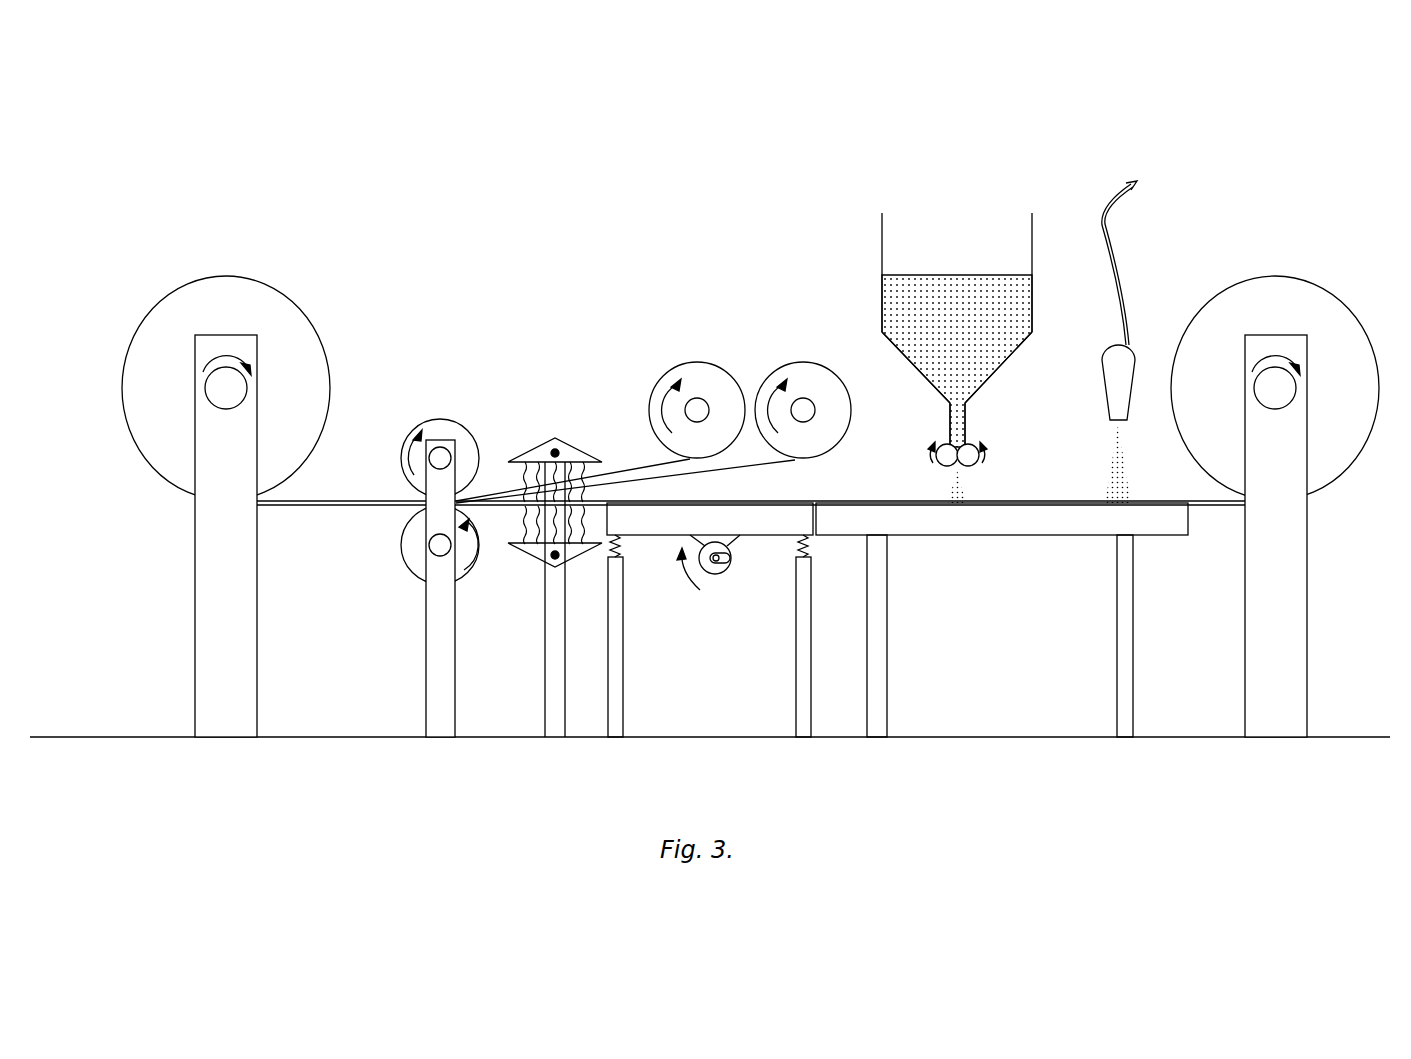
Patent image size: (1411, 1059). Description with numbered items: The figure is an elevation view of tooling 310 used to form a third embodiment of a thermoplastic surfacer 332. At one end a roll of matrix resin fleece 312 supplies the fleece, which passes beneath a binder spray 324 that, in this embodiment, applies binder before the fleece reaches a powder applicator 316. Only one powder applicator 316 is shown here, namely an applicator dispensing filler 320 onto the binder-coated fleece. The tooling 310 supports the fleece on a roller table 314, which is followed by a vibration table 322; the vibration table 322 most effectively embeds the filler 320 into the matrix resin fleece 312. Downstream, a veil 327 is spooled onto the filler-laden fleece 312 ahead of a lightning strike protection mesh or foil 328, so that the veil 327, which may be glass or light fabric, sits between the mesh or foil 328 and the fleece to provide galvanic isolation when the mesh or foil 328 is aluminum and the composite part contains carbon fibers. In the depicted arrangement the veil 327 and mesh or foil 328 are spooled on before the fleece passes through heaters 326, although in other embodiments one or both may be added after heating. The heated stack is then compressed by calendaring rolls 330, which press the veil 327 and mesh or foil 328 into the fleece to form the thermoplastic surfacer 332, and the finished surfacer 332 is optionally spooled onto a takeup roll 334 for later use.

The tooling 310 is at (328, 118).
The roll of matrix resin fleece 312 is at (1300, 295).
The roller table 314 is at (1158, 518).
The powder applicator 316 is at (913, 306).
The filler 320 is at (930, 285).
The vibration table 322 is at (755, 523).
The binder spray 324 is at (1125, 355).
The heaters 326 is at (556, 437).
The veil 327 is at (810, 365).
The lightning strike protection mesh or foil 328 is at (690, 365).
The calendaring rolls 330 is at (376, 519).
The thermoplastic surfacer 332 is at (330, 503).
The takeup roll 334 is at (180, 315).